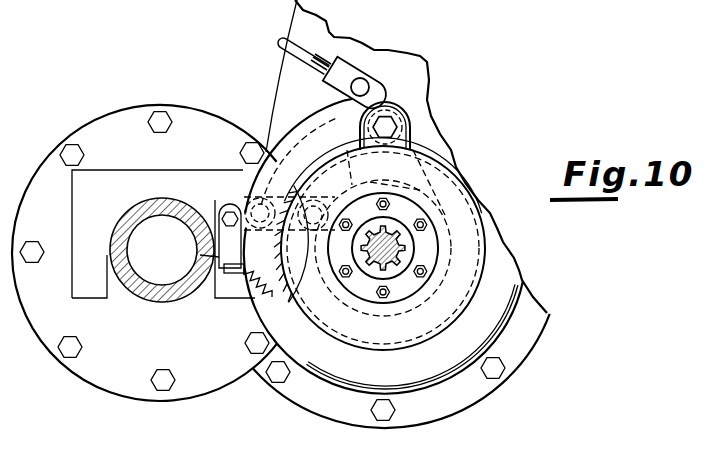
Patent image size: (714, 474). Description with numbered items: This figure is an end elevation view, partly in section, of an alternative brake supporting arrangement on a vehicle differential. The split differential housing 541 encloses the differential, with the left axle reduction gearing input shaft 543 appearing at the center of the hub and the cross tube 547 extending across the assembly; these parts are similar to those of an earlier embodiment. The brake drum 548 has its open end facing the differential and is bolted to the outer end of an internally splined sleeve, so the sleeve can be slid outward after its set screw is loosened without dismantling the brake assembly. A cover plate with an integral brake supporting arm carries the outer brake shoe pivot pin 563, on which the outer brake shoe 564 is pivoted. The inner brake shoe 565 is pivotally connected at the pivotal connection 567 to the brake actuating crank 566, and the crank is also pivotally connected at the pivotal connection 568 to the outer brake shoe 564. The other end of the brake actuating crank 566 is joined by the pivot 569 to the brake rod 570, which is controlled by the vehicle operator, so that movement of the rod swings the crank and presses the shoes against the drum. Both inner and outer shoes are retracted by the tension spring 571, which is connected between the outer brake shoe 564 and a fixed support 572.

The split differential housing 541 is at (456, 410).
The left axle reduction gearing input shaft 543 is at (395, 249).
The cross tube 547 is at (183, 300).
The brake drum 548 is at (416, 346).
The outer brake shoe pivot pin 563 is at (388, 110).
The outer brake shoe 564 is at (291, 130).
The inner brake shoe 565 is at (312, 321).
The brake actuating crank 566 is at (264, 135).
The pivotal connection 567 is at (353, 182).
The pivotal connection 568 is at (241, 204).
The pivot 569 is at (366, 80).
The brake rod 570 is at (305, 50).
The tension spring 571 is at (257, 300).
The fixed support 572 is at (207, 254).